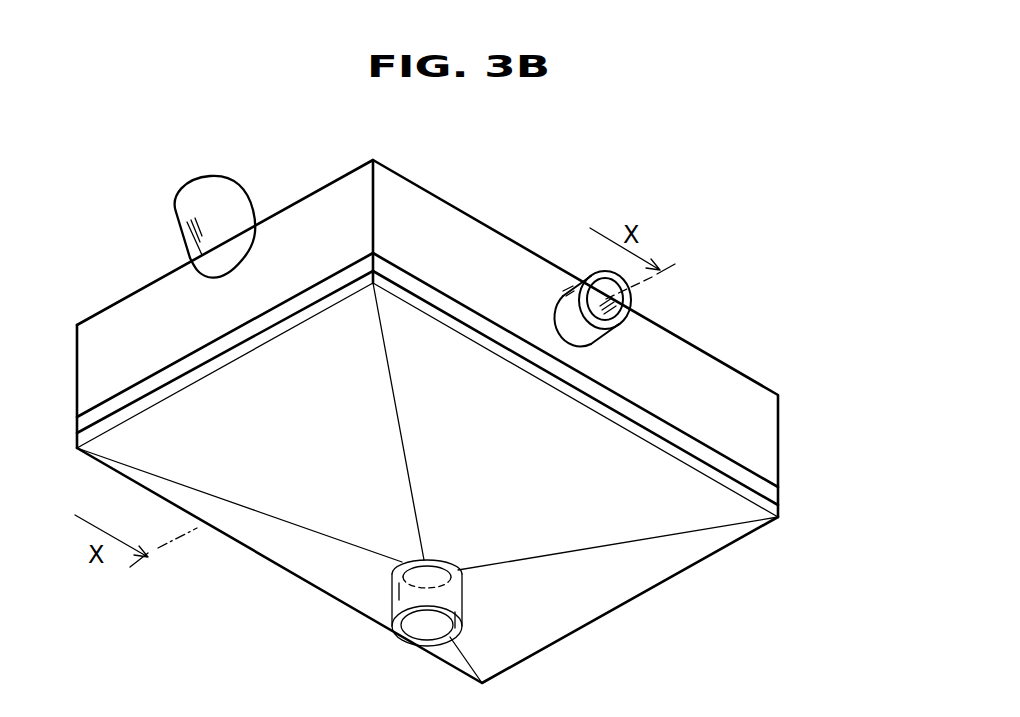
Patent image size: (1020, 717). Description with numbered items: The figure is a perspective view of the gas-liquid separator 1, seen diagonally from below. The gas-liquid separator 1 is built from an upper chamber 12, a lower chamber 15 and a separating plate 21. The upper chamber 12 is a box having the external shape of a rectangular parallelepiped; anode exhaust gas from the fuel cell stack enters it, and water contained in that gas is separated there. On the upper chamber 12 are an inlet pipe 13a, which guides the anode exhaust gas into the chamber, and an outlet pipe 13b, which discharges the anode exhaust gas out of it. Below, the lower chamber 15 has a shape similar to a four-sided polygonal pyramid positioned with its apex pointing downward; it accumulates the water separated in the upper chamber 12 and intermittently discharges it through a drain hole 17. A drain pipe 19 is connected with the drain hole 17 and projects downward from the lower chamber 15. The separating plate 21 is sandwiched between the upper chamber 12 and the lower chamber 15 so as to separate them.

The gas-liquid separator 1 is at (542, 188).
The upper chamber 12 is at (442, 215).
The inlet pipe 13a is at (652, 326).
The outlet pipe 13b is at (188, 186).
The lower chamber 15 is at (653, 560).
The drain hole 17 is at (463, 612).
The drain pipe 19 is at (391, 603).
The separating plate 21 is at (708, 457).